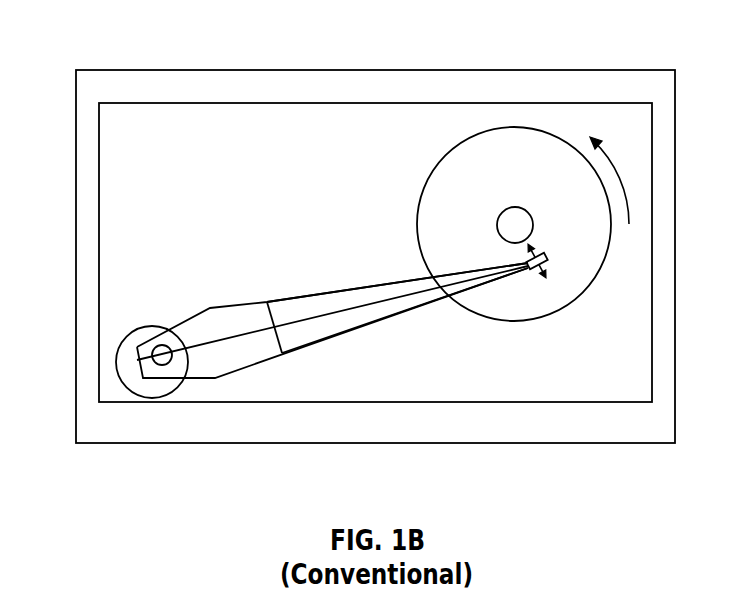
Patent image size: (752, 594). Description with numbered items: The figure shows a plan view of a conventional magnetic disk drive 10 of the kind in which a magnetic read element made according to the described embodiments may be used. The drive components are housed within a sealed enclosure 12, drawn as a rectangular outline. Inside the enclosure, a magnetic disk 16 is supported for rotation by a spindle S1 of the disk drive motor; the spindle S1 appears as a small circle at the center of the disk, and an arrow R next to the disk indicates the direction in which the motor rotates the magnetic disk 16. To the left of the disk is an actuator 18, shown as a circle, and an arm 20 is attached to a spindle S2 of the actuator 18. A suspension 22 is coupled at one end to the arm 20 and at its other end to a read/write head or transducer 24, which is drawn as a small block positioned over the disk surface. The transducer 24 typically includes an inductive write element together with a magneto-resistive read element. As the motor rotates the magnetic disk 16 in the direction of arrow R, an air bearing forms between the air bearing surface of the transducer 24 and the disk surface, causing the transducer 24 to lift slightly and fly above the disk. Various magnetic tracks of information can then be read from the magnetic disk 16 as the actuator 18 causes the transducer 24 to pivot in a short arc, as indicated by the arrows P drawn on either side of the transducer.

The magnetic disk drive 10 is at (478, 52).
The sealed enclosure 12 is at (487, 443).
The magnetic disk 16 is at (479, 197).
The actuator 18 is at (137, 340).
The arm 20 is at (227, 313).
The suspension 22 is at (335, 325).
The read/write head or transducer 24 is at (545, 252).
The spindle S1 is at (515, 213).
The spindle S2 is at (173, 357).
The arrows P is at (546, 257).
The arrow R is at (614, 180).